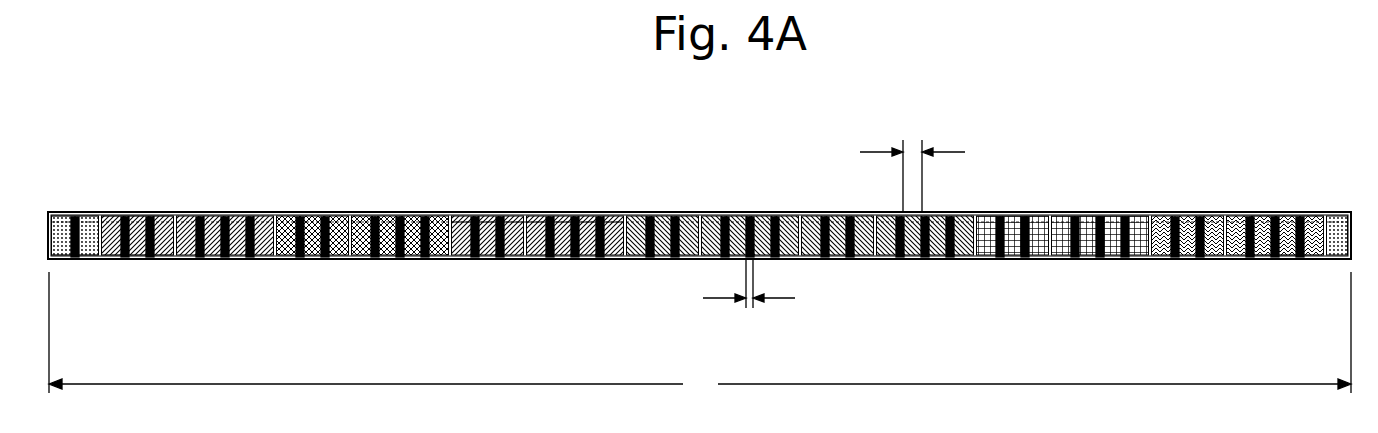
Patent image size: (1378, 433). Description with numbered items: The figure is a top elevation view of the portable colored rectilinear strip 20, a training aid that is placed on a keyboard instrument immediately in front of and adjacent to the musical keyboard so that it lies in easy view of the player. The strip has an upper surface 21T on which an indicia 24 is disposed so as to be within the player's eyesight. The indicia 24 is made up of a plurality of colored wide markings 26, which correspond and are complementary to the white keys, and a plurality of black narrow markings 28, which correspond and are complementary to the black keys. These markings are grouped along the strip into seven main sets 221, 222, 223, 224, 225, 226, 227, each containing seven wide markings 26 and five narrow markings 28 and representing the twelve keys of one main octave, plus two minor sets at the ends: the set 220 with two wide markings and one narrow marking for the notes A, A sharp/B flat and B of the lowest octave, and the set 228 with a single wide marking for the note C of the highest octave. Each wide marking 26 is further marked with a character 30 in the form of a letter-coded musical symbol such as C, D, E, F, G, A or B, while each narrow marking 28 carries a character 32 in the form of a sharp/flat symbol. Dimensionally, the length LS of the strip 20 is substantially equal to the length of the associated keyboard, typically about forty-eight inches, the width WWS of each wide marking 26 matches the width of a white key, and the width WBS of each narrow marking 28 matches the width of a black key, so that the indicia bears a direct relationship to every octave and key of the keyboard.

The rectilinear colored strip 20 is at (97, 156).
The upper surface 21T is at (69, 260).
The minor set of markings 220 is at (98, 211).
The main set of markings 221 is at (188, 261).
The main set of markings 222 is at (363, 214).
The main set of markings 223 is at (538, 261).
The main set of markings 224 is at (713, 214).
The main set of markings 225 is at (888, 261).
The main set of markings 226 is at (1063, 213).
The main set of markings 227 is at (1238, 261).
The minor set of markings 228 is at (1350, 211).
The indicia 24 is at (666, 264).
The wide markings 26 is at (588, 214).
The narrow markings 28 is at (1115, 291).
The character 30 is at (168, 214).
The character 32 is at (256, 214).
The width of wide marking WWS is at (912, 142).
The width of narrow marking WBS is at (750, 309).
The length of rectilinear strip LS is at (700, 335).